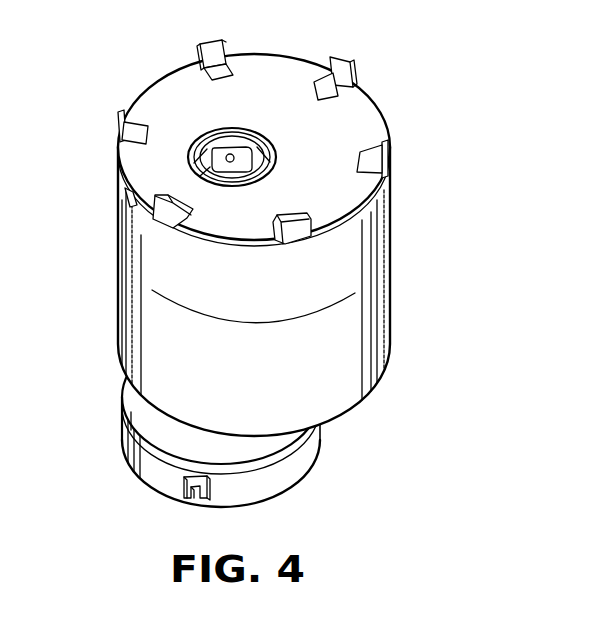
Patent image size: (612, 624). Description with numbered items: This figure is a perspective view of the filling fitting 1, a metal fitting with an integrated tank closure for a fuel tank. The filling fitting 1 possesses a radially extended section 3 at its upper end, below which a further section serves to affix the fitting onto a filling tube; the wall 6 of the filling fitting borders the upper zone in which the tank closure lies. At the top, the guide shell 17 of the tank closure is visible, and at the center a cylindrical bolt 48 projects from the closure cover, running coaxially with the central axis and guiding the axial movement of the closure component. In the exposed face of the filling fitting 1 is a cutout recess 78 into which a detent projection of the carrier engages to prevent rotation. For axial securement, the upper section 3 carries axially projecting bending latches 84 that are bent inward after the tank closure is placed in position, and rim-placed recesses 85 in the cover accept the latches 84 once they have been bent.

The filling fitting 1 is at (295, 291).
The radially extended section 3 is at (382, 210).
The wall 6 is at (300, 453).
The guide shell 17 is at (262, 160).
The bolt 48 is at (231, 154).
The cutout recess 78 is at (130, 198).
The bending latches 84 is at (340, 60).
The recesses 85 is at (207, 46).